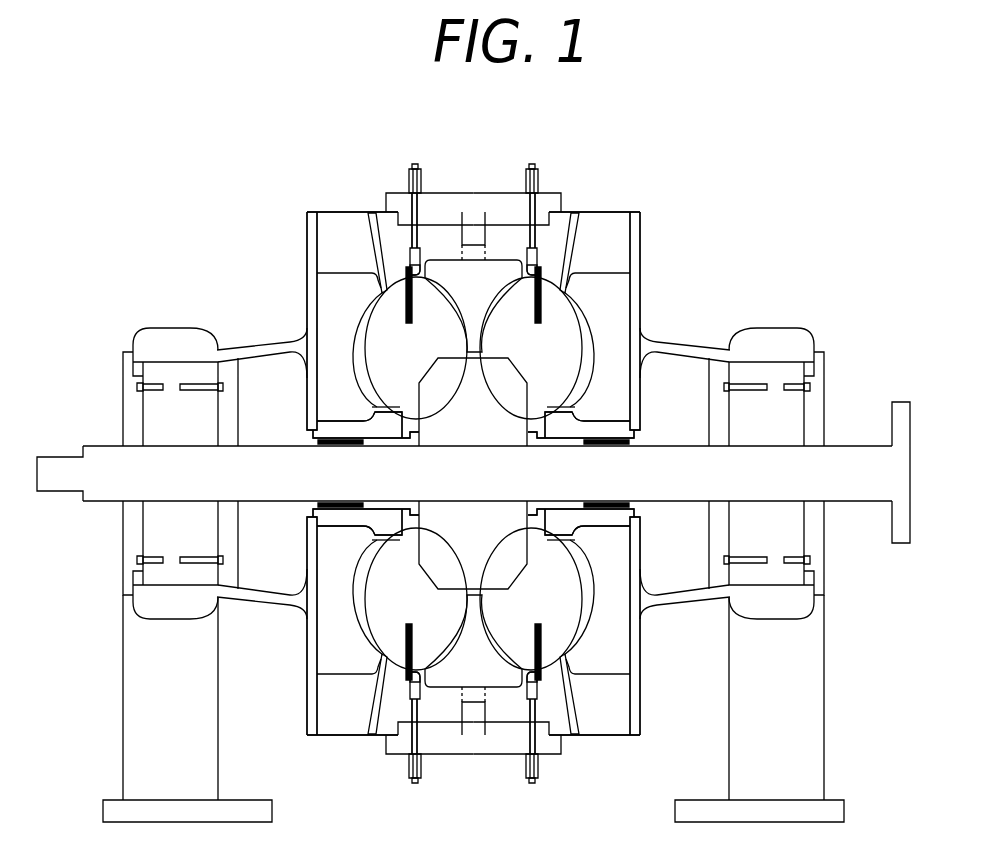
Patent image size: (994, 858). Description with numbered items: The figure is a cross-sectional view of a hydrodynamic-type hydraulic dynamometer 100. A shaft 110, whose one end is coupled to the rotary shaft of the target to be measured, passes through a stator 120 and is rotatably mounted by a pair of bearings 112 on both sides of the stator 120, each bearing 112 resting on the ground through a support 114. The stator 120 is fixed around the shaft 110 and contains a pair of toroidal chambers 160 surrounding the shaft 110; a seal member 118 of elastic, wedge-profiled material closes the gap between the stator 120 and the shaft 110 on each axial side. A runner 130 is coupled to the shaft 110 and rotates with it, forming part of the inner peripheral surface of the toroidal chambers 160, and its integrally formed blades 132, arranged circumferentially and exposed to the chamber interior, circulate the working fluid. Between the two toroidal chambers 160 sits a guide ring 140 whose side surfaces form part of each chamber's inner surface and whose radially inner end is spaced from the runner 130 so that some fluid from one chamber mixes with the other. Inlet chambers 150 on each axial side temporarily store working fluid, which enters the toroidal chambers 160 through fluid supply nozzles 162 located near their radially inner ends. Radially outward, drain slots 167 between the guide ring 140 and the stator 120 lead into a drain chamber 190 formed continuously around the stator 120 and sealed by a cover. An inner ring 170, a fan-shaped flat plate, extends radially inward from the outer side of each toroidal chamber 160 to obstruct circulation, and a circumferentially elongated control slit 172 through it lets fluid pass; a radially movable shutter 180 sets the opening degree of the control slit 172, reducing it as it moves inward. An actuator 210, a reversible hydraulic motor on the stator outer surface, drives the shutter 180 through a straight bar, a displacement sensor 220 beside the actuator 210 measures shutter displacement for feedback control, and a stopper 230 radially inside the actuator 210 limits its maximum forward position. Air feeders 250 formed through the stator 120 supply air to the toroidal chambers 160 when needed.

The hydrodynamic-type hydraulic dynamometer 100 is at (412, 118).
The shaft 110 is at (678, 493).
The bearings 112 is at (155, 400).
The support 114 is at (165, 713).
The seal member 118 is at (318, 443).
The stator 120 is at (372, 297).
The runner 130 is at (490, 427).
The blades 132 is at (507, 380).
The guide ring 140 is at (473, 320).
The inlet chambers 150 is at (330, 368).
The toroidal chamber 160 is at (378, 337).
The fluid supply nozzles 162 is at (363, 411).
The drain slots 167 is at (415, 248).
The inner ring 170 is at (540, 305).
The control slit 172 is at (540, 277).
The shutter 180 is at (530, 250).
The drain chamber 190 is at (448, 233).
The actuator 210 is at (534, 163).
The displacement sensor 220 is at (525, 177).
The stopper 230 is at (527, 197).
The air feeders 250 is at (370, 212).